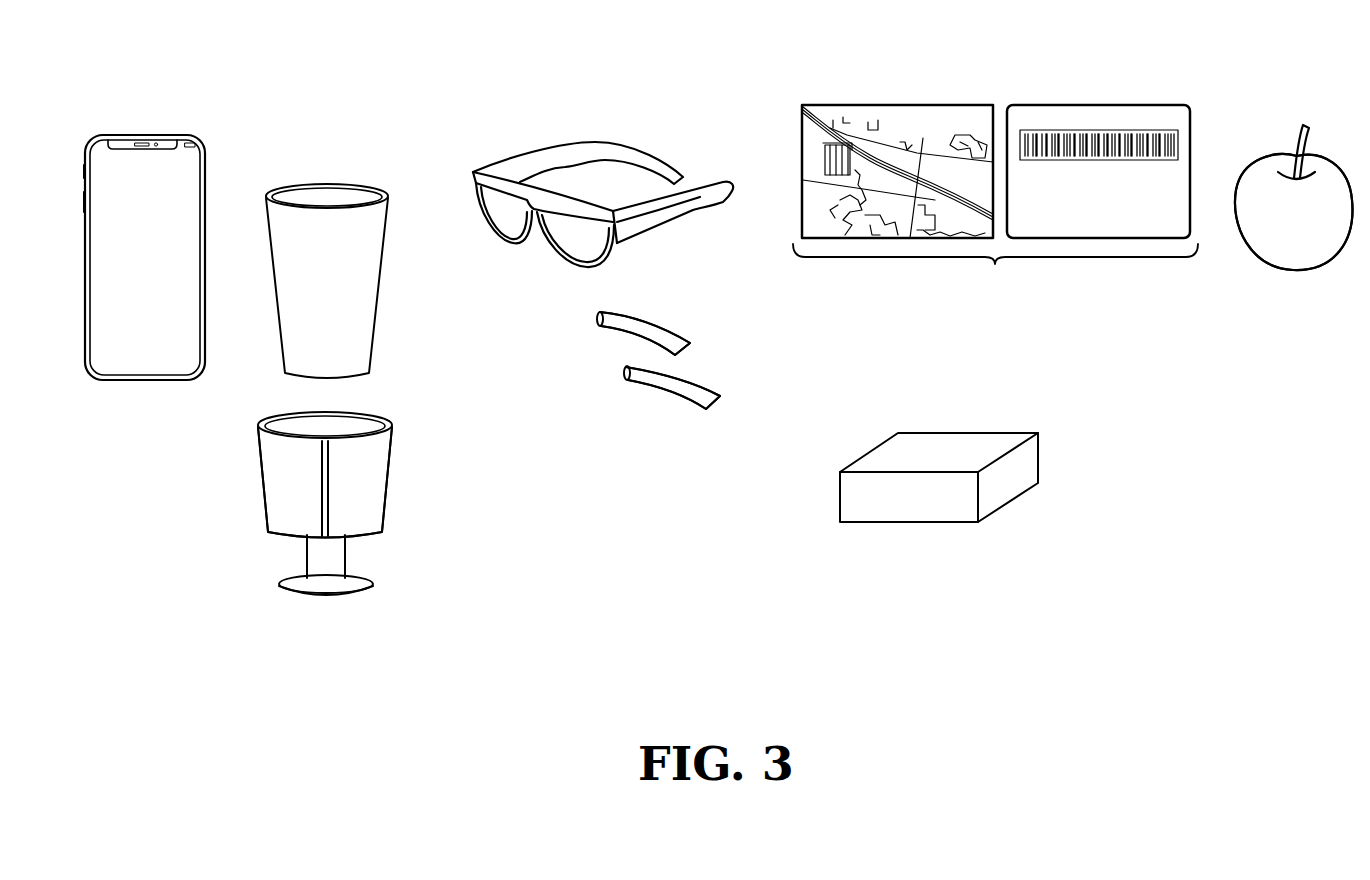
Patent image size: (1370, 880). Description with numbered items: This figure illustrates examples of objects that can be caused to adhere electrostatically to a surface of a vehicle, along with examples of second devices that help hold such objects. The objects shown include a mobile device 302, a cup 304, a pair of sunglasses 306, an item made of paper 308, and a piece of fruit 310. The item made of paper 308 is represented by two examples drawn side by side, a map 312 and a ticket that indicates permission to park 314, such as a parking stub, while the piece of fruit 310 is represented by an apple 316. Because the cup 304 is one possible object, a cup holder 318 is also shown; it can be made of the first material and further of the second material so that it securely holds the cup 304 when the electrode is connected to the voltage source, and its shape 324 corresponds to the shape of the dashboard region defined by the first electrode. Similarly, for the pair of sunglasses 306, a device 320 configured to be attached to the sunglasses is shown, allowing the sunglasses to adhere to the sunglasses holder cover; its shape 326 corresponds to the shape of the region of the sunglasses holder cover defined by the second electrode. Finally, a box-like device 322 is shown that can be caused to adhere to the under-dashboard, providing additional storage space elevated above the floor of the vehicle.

The mobile device 302 is at (132, 135).
The cup 304 is at (345, 183).
The pair of sunglasses 306 is at (601, 140).
The item made of paper 308 is at (995, 267).
The piece of fruit 310 is at (1297, 243).
The map 312 is at (900, 105).
The ticket that indicates permission to park 314 is at (1078, 105).
The apple 316 is at (1294, 212).
The cup holder 318 is at (378, 487).
The device configured to be attached to the pair of sunglasses 320 is at (623, 374).
The device configured to adhere to the under-dashboard 322 is at (945, 445).
The shape of the cup holder 324 is at (325, 482).
The shape of the device configured to be attached to the pair of sunglasses 326 is at (660, 360).